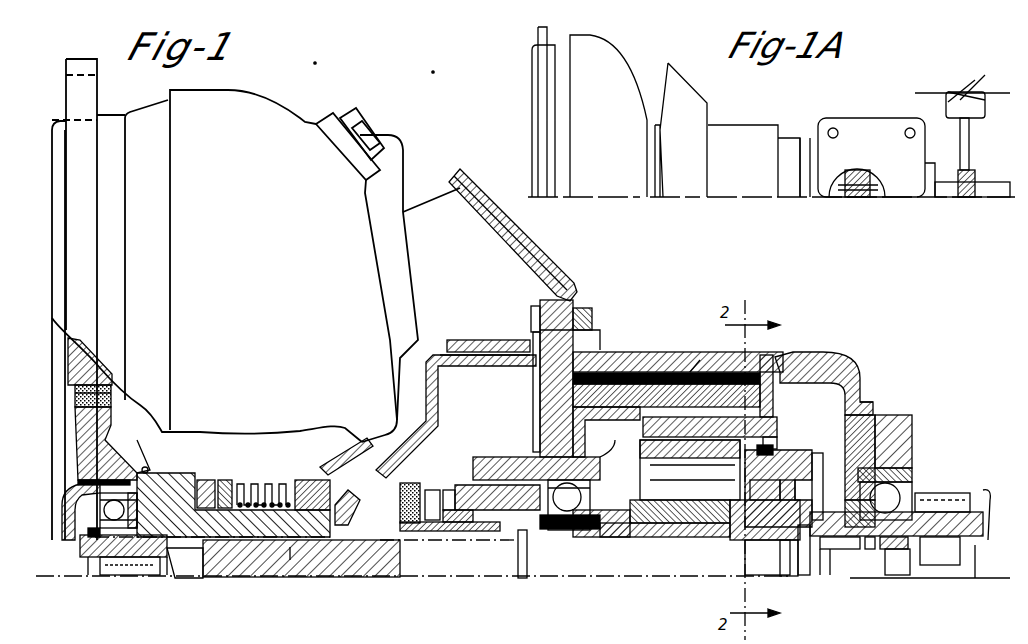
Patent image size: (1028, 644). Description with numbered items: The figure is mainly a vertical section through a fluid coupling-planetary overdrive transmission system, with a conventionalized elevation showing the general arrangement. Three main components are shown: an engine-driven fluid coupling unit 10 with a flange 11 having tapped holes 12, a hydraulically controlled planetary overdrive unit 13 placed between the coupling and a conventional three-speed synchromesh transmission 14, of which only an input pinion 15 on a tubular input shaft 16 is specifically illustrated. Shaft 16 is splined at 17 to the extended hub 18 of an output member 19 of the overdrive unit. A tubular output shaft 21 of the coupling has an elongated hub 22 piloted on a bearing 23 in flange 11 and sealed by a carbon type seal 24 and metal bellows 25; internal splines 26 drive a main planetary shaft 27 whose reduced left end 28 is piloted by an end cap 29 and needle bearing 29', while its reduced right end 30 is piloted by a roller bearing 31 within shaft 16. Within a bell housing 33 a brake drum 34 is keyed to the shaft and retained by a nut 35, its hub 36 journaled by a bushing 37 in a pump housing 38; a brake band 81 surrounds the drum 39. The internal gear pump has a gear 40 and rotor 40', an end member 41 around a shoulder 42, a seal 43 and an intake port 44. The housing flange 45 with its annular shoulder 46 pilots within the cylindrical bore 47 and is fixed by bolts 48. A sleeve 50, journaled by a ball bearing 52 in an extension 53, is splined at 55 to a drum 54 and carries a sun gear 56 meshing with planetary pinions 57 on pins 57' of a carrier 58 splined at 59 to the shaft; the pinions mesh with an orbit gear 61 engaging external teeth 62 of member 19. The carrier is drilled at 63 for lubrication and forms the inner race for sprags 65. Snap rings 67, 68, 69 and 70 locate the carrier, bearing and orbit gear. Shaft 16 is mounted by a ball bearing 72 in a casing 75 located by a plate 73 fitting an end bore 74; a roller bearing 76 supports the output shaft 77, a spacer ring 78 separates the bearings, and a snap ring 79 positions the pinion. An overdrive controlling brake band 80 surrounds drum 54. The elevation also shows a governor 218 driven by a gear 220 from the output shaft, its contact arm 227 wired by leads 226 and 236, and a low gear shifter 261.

In FIG. 1, the fluid coupling unit 10 is at (311, 110).
In FIG. 1A, the fluid coupling unit 10 is at (622, 50).
In FIG. 1, the flange 11 is at (68, 358).
In FIG. 1, the tapped holes 12 is at (84, 397).
In FIG. 1, the overdrive unit 13 is at (672, 343).
In FIG. 1A, the overdrive unit 13 is at (722, 128).
In FIG. 1A, the transmission 14 is at (845, 120).
In FIG. 1, the input pinion 15 is at (980, 500).
In FIG. 1, the tubular input shaft 16 is at (983, 524).
In FIG. 1, the splines 17 is at (805, 560).
In FIG. 1, the extended hub 18 is at (850, 507).
In FIG. 1, the output member 19 is at (818, 460).
In FIG. 1, the tubular output shaft 21 is at (178, 540).
In FIG. 1, the hub 22 is at (270, 550).
In FIG. 1, the bearing 23 is at (75, 521).
In FIG. 1, the carbon type seal 24 is at (205, 482).
In FIG. 1, the compressible metal bellows 25 is at (265, 485).
In FIG. 1, the internal splines 26 is at (292, 560).
In FIG. 1, the main planetary shaft 27 is at (212, 560).
In FIG. 1, the reduced diameter left hand end 28 is at (108, 565).
In FIG. 1, the end cap 29 is at (91, 546).
In FIG. 1, the needle bearing 29' is at (127, 583).
In FIG. 1, the reduced diameter end 30 is at (838, 575).
In FIG. 1, the roller bearing 31 is at (826, 560).
In FIG. 1, the bell housing 33 is at (560, 268).
In FIG. 1A, the bell housing 33 is at (685, 85).
In FIG. 1, the brake drum 34 is at (428, 372).
In FIG. 1, the nut 35 is at (345, 515).
In FIG. 1, the hub 36 is at (445, 522).
In FIG. 1, the bushing 37 is at (455, 525).
In FIG. 1, the pump housing 38 is at (432, 490).
In FIG. 1, the drum 39 is at (447, 356).
In FIG. 1, the pump gear 40 is at (536, 460).
In FIG. 1, the pump rotor 40' is at (450, 544).
In FIG. 1, the end member 41 is at (534, 445).
In FIG. 1, the shoulder 42 is at (522, 578).
In FIG. 1, the seal 43 is at (405, 483).
In FIG. 1, the intake port 44 is at (470, 485).
In FIG. 1, the flange 45 is at (535, 337).
In FIG. 1, the annular shoulder 46 is at (604, 372).
In FIG. 1, the cylindrical bore 47 is at (783, 372).
In FIG. 1, the bolts 48 is at (592, 322).
In FIG. 1, the sleeve 50 is at (645, 537).
In FIG. 1, the ball bearing 52 is at (583, 530).
In FIG. 1, the right hand extension 53 is at (605, 440).
In FIG. 1, the drum 54 is at (630, 372).
In FIG. 1, the external splines 55 is at (605, 537).
In FIG. 1, the sun gear 56 is at (690, 523).
In FIG. 1, the planetary pinions 57 is at (690, 470).
In FIG. 1, the pins 57' is at (765, 490).
In FIG. 1, the planetary carrier 58 is at (782, 495).
In FIG. 1, the splines 59 is at (770, 545).
In FIG. 1, the orbit gear 61 is at (772, 425).
In FIG. 1, the external teeth 62 is at (773, 450).
In FIG. 1, the lubrication drilling 63 is at (718, 540).
In FIG. 1, the sprags 65 is at (800, 470).
In FIG. 1, the snap ring 67 is at (790, 560).
In FIG. 1, the snap ring 68 is at (560, 530).
In FIG. 1, the snap ring 69 is at (612, 445).
In FIG. 1, the snap ring 70 is at (777, 440).
In FIG. 1, the ball bearing 72 is at (912, 473).
In FIG. 1, the plate 73 is at (870, 415).
In FIG. 1, the end bore 74 is at (866, 404).
In FIG. 1, the casing 75 is at (912, 428).
In FIG. 1A, the casing 75 is at (810, 192).
In FIG. 1, the roller bearing 76 is at (940, 565).
In FIG. 1, the output shaft 77 is at (972, 572).
In FIG. 1A, the output shaft 77 is at (985, 197).
In FIG. 1, the spacer ring 78 is at (897, 575).
In FIG. 1, the snap ring 79 is at (855, 549).
In FIG. 1, the overdrive controlling brake band 80 is at (708, 348).
In FIG. 1, the brake band 81 is at (467, 340).
In FIG. 1A, the electrical governor 218 is at (960, 78).
In FIG. 1A, the gear 220 is at (975, 170).
In FIG. 1A, the lead 226 is at (981, 85).
In FIG. 1A, the contact arm 227 is at (987, 77).
In FIG. 1A, the lead 236 is at (935, 92).
In FIG. 1A, the low gear shifter 261 is at (855, 172).